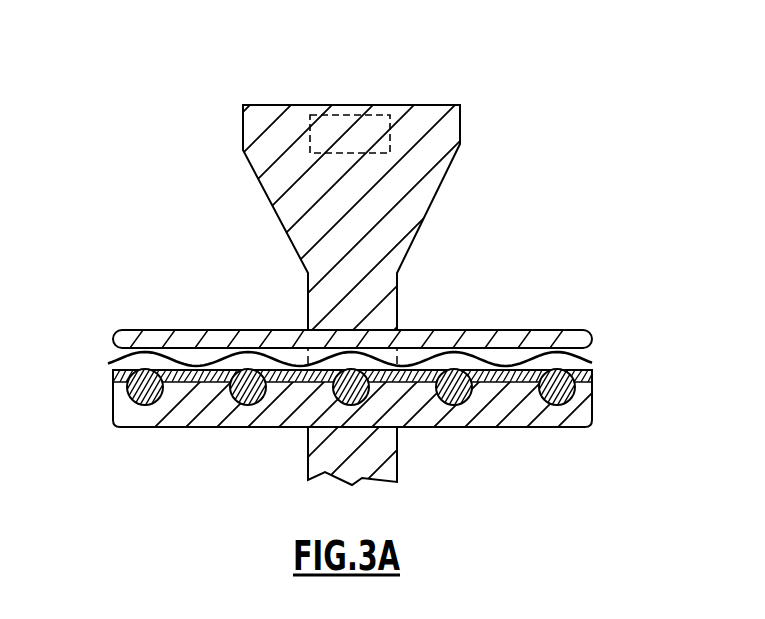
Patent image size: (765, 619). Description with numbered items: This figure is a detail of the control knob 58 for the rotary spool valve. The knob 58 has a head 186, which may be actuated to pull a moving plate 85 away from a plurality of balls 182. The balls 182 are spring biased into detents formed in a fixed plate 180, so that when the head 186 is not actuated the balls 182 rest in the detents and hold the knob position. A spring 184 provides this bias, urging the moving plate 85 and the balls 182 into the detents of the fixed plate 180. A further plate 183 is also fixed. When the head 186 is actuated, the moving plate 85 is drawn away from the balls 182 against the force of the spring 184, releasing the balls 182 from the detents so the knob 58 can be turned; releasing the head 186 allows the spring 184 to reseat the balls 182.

The knob 58 is at (459, 63).
The head 186 is at (447, 125).
The plate 183 is at (137, 333).
The spring 184 is at (119, 357).
The moving plate 85 is at (352, 429).
The balls 182 is at (131, 399).
The fixed plate 180 is at (186, 412).